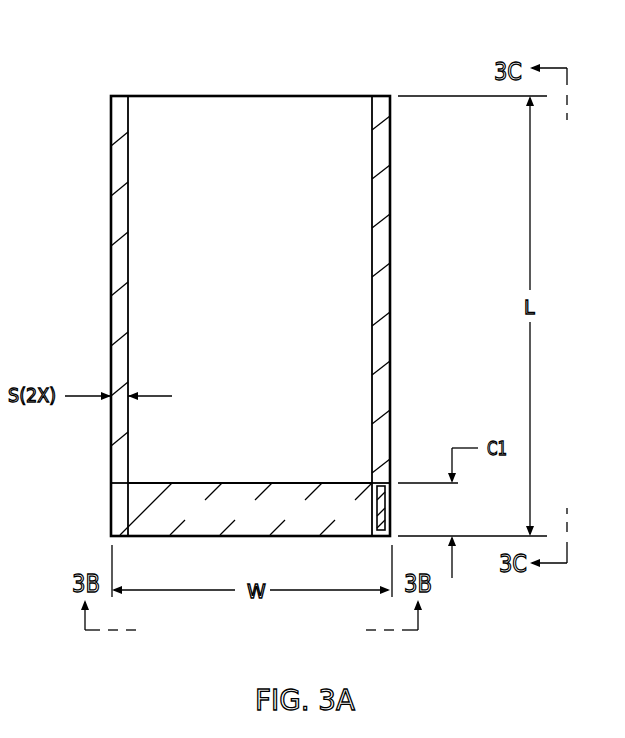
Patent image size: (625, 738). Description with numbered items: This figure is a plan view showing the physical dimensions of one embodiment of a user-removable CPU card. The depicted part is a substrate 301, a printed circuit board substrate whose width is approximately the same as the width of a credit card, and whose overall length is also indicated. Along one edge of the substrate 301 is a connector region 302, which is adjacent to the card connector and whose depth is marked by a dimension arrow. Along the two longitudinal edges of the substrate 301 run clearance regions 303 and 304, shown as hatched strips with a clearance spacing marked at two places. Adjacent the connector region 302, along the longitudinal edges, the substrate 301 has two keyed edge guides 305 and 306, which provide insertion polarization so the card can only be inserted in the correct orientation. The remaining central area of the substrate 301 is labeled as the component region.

The substrate 301 is at (247, 284).
The connector region 302 is at (290, 482).
The clearance region 303 is at (118, 457).
The clearance region 304 is at (382, 395).
The keyed edge guide 305 is at (118, 513).
The keyed edge guide 306 is at (389, 511).